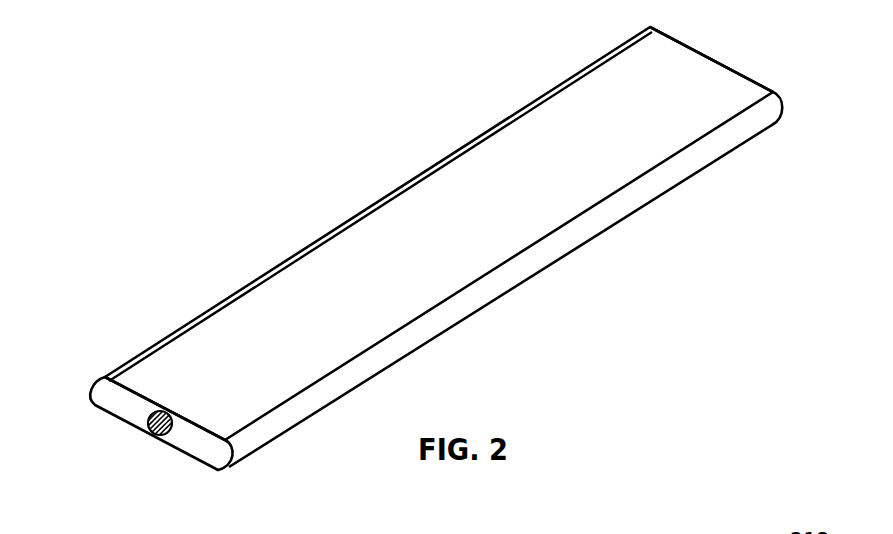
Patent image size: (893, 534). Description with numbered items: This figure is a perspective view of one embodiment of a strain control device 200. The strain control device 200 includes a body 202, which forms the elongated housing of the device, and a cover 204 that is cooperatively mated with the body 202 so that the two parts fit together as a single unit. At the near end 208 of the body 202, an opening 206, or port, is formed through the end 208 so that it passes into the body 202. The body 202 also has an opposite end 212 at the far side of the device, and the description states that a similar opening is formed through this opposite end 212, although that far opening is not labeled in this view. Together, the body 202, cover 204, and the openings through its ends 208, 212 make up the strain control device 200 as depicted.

The strain control device 200 is at (435, 278).
The body 202 is at (463, 323).
The cover 204 is at (177, 333).
The opening 206 is at (168, 437).
The end 208 is at (130, 426).
The opposite end 212 is at (688, 46).